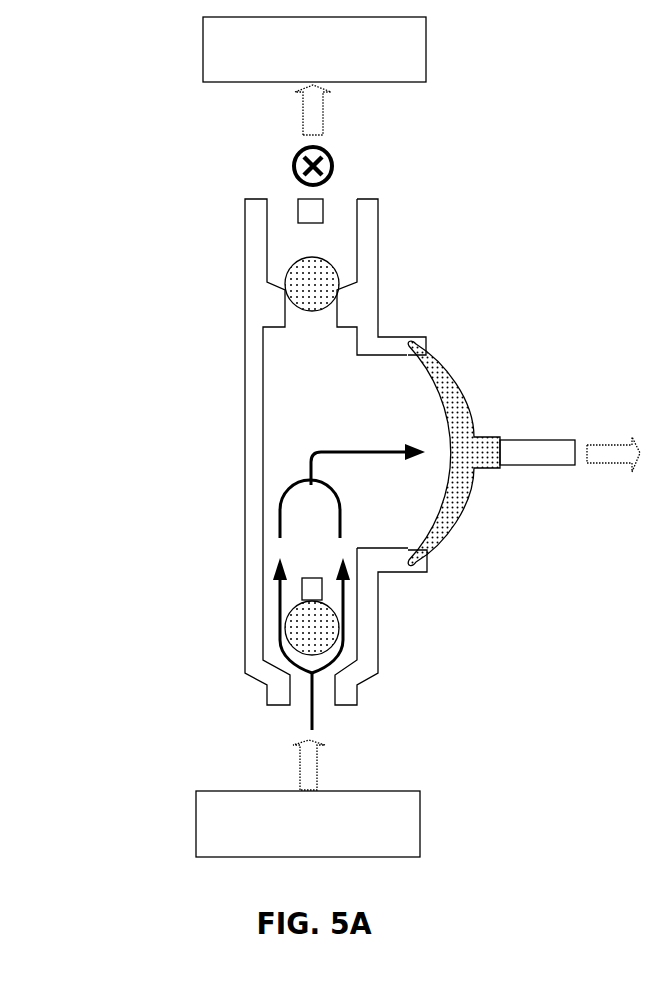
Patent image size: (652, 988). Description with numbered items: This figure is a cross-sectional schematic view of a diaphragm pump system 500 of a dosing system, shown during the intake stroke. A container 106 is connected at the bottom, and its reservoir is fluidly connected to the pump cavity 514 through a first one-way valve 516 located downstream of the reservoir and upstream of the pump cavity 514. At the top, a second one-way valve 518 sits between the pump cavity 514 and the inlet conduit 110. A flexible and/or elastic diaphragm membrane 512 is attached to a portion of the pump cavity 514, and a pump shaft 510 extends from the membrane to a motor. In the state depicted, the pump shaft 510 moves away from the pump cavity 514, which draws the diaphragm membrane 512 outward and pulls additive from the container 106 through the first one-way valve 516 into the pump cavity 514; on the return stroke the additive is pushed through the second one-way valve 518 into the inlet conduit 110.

The diaphragm pump system 500 is at (470, 125).
The pump shaft 510 is at (558, 466).
The diaphragm membrane 512 is at (460, 513).
The pump cavity 514 is at (329, 402).
The first one-way valve 516 is at (207, 633).
The second one-way valve 518 is at (207, 262).
The inlet conduit 110 is at (295, 72).
The container 106 is at (288, 847).